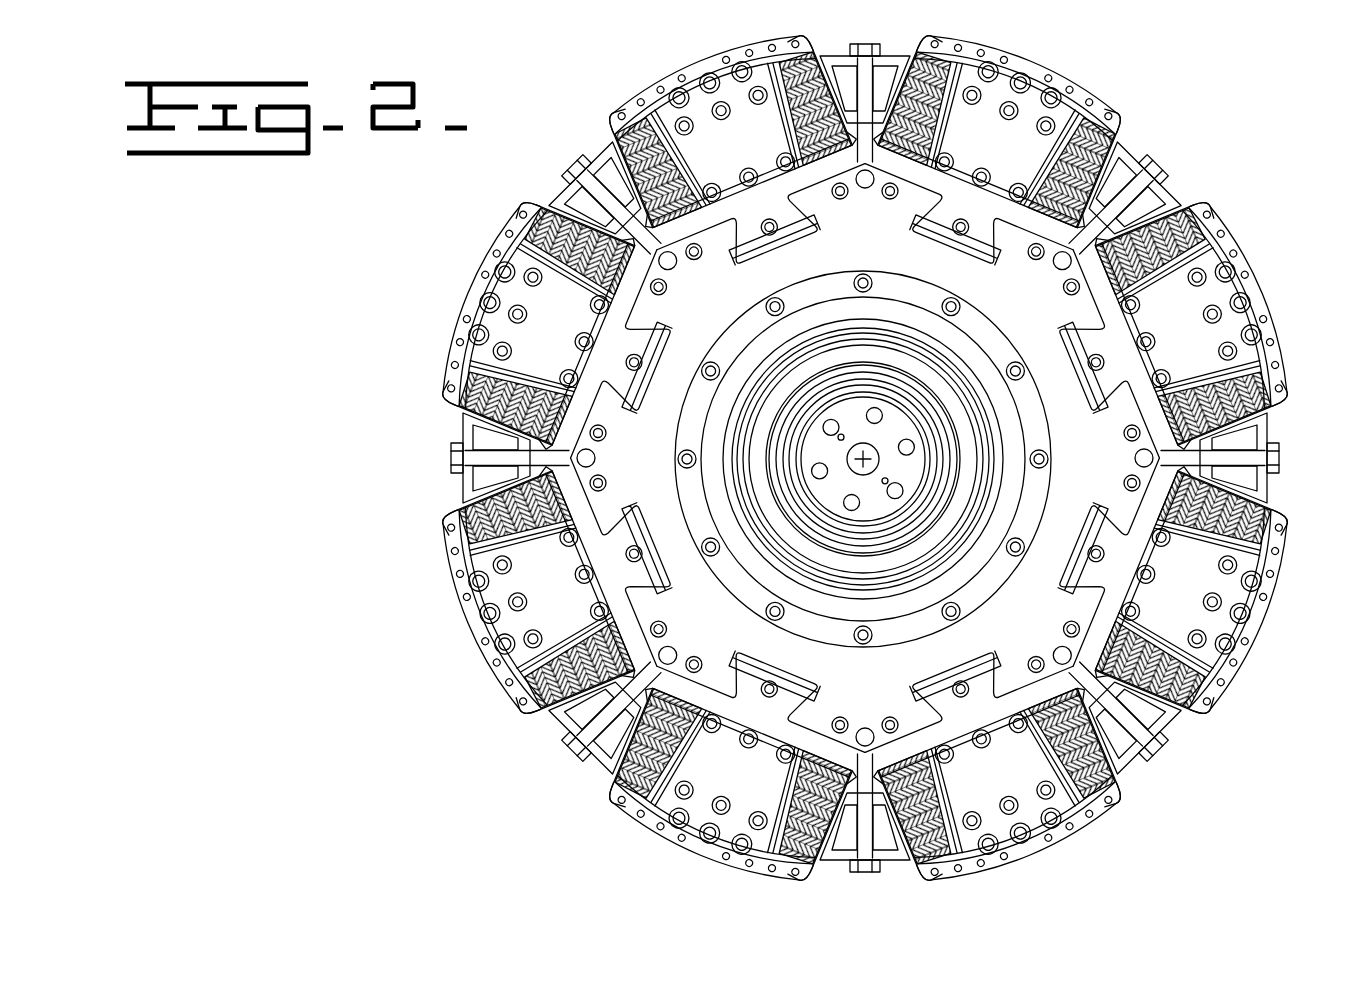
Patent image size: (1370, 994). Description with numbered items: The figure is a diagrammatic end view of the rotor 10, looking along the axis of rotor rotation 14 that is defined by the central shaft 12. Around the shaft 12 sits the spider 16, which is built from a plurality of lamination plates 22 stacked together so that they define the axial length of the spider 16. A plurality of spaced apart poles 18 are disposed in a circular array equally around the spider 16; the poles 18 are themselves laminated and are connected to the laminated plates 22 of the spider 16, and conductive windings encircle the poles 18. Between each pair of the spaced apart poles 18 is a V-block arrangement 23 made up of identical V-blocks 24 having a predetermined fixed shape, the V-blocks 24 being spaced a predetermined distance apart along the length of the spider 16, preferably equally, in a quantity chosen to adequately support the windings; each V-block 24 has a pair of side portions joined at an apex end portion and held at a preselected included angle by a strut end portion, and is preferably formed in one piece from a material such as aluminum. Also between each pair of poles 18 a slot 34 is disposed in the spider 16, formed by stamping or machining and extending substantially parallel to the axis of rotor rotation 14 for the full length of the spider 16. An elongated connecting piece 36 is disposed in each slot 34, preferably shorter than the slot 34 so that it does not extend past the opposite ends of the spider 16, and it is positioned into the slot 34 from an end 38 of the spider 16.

The rotor 10 is at (330, 573).
The shaft 12 is at (915, 473).
The axis of rotor rotation 14 is at (910, 445).
The spider 16 is at (948, 458).
The poles 18 is at (452, 330).
The lamination plates 22 is at (600, 598).
The V-block arrangement 23 is at (828, 460).
The V-blocks 24 is at (556, 752).
The slot 34 is at (598, 208).
The elongated connecting piece 36 is at (530, 442).
The end 38 is at (1090, 318).